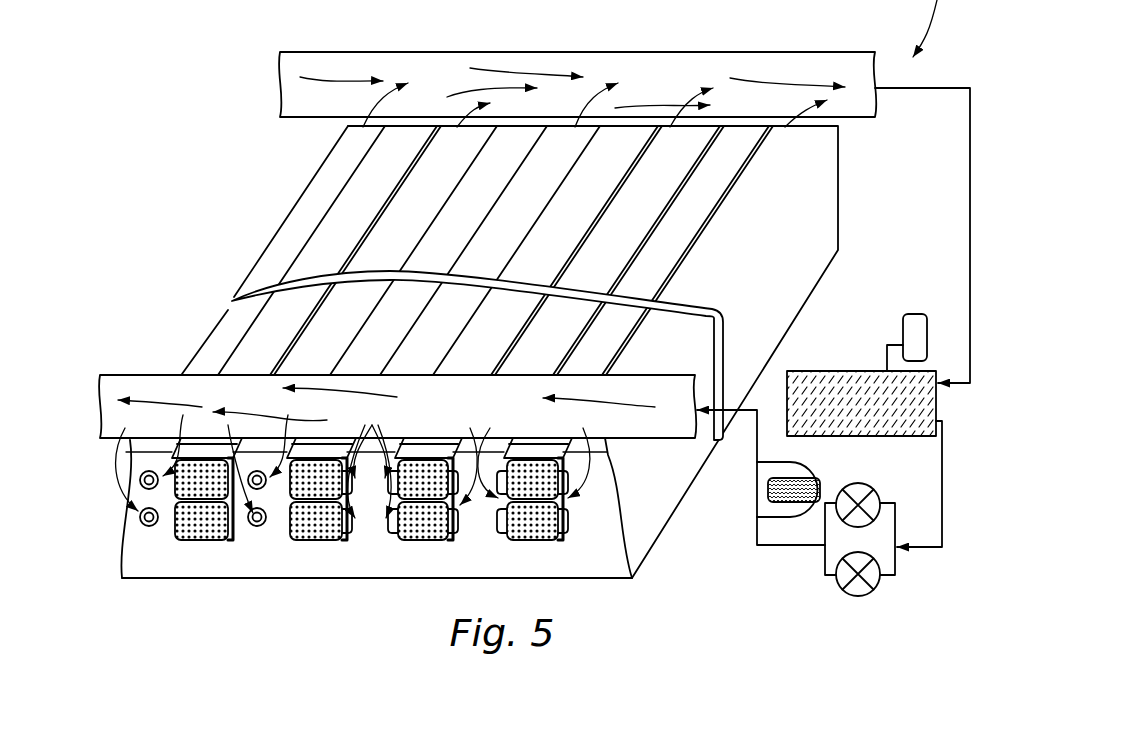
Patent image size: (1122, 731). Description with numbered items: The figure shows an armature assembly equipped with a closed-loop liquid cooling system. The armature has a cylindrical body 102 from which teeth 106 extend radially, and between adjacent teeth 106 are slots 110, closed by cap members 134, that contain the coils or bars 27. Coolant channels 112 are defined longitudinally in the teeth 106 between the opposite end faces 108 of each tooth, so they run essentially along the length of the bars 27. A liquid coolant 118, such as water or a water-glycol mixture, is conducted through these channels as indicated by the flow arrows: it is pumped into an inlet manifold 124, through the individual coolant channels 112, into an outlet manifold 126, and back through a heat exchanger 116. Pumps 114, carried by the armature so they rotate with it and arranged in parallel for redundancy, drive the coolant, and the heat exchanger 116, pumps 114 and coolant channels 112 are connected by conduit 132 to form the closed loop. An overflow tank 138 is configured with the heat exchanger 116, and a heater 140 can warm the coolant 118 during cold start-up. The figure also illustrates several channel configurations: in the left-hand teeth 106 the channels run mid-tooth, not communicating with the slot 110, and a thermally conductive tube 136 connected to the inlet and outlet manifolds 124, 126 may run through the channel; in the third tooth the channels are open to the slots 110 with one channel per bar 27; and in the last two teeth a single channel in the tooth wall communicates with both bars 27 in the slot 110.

The coils/bars 27 is at (437, 527).
The body 102 is at (397, 532).
The teeth 106 is at (272, 258).
The end faces 108 is at (600, 495).
The slots 110 is at (472, 347).
The coolant channels 112 is at (339, 548).
The pumps 114 is at (860, 492).
The heat exchanger 116 is at (812, 388).
The liquid coolant 118 is at (320, 78).
The inlet manifold 124 is at (152, 374).
The outlet manifold 126 is at (306, 118).
The conduit 132 is at (969, 250).
The cap members 134 is at (327, 447).
The thermally conductive tube 136 is at (140, 481).
The overflow tank 138 is at (914, 326).
The heater 140 is at (822, 490).